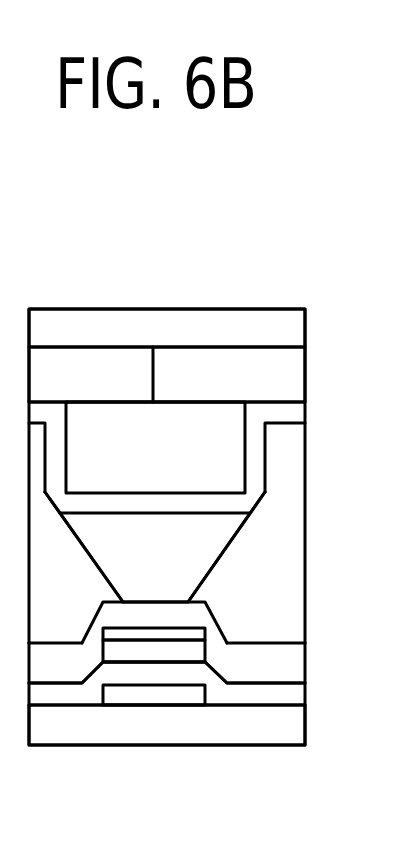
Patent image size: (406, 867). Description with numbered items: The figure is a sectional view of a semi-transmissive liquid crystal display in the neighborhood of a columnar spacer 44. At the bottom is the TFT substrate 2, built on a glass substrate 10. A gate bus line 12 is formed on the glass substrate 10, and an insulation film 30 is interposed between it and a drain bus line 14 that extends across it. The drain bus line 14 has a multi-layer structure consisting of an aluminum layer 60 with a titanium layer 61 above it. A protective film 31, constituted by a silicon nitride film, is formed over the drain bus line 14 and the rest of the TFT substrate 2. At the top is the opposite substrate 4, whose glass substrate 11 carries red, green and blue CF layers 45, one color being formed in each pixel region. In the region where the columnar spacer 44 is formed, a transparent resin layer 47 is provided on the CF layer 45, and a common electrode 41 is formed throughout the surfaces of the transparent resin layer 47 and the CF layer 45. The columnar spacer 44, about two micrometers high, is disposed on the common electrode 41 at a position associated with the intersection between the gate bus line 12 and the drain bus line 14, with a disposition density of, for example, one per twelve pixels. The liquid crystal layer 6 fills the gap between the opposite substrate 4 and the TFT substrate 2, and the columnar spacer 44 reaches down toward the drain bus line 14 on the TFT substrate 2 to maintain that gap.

The TFT substrate 2 is at (270, 765).
The opposite substrate 4 is at (258, 282).
The liquid crystal layer 6 is at (280, 515).
The glass substrate 10 is at (293, 728).
The glass substrate 11 is at (288, 327).
The gate bus line 12 is at (180, 695).
The drain bus line 14 is at (192, 619).
The insulation film 30 is at (292, 692).
The protective film 31 is at (288, 662).
The common electrode 41 is at (288, 413).
The columnar spacer 44 is at (178, 563).
The CF layer 45 is at (288, 377).
The transparent resin layer 47 is at (223, 462).
The aluminum layer 60 is at (112, 653).
The titanium layer 61 is at (128, 635).